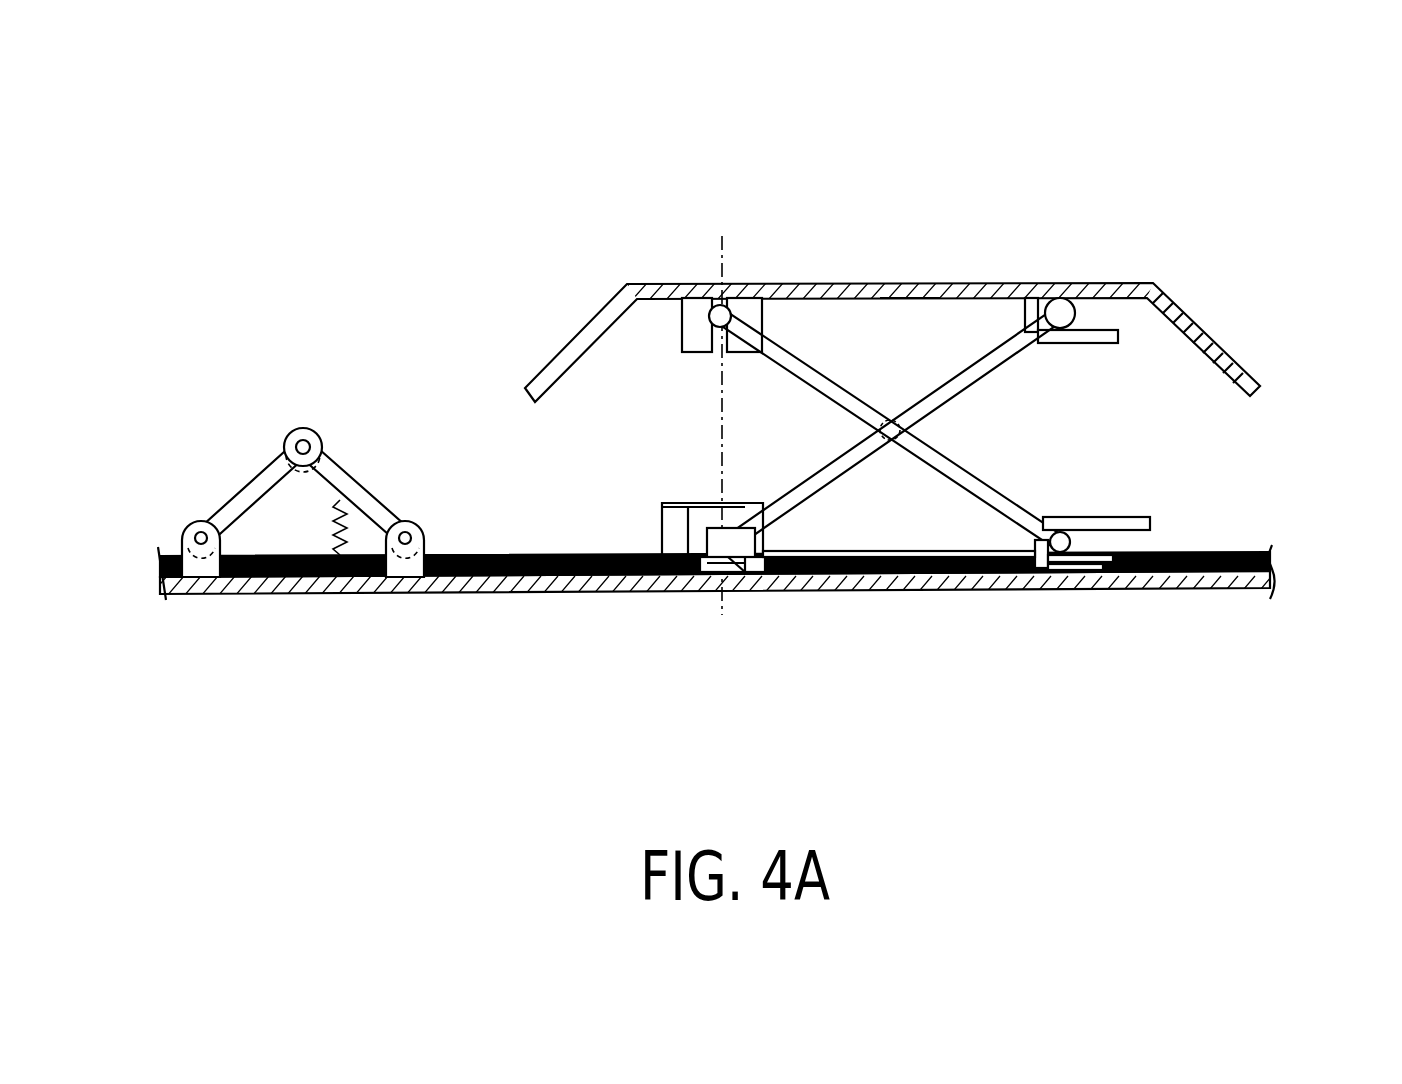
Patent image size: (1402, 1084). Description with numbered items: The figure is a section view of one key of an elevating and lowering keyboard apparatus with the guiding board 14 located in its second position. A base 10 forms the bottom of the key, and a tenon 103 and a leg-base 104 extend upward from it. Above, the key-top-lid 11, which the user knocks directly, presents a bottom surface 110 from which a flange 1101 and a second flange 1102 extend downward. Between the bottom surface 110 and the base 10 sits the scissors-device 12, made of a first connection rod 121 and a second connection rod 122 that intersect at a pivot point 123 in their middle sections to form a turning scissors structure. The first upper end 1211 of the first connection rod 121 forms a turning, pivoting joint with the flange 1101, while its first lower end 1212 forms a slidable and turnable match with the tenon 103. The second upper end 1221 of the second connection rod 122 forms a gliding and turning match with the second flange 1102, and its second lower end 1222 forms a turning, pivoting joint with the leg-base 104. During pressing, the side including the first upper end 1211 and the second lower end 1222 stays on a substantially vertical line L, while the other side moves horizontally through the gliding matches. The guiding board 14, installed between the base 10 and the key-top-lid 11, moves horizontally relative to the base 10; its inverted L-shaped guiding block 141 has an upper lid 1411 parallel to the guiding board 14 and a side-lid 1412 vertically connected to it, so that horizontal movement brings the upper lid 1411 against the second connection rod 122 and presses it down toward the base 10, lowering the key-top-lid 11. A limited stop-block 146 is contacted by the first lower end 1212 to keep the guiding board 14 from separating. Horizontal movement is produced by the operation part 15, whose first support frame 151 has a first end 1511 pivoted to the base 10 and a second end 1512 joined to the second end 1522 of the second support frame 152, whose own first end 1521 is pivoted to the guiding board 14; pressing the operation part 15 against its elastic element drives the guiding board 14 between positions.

The base 10 is at (930, 595).
The key-top-lid 11 is at (990, 284).
The bottom surface 110 is at (910, 298).
The flange 1101 is at (692, 333).
The second flange 1102 is at (1118, 345).
The scissors-device 12 is at (990, 432).
The first connection rod 121 is at (1010, 510).
The second connection rod 122 is at (800, 490).
The pivot point 123 is at (875, 433).
The first upper end 1211 is at (712, 304).
The first lower end 1212 is at (1058, 559).
The second upper end 1221 is at (1153, 283).
The second lower end 1222 is at (752, 565).
The guiding board 14 is at (912, 584).
The guiding block 141 is at (656, 616).
The upper lid 1411 is at (686, 575).
The side-lid 1412 is at (670, 523).
The limited stop-block 146 is at (1110, 548).
The tenon 103 is at (1087, 522).
The leg-base 104 is at (745, 575).
The operation part 15 is at (301, 457).
The first support frame 151 is at (240, 480).
The second support frame 152 is at (360, 480).
The first end of first support frame 1511 is at (183, 527).
The second end of first support frame 1512 is at (286, 440).
The first end of second support frame 1521 is at (425, 525).
The second end of second support frame 1522 is at (318, 432).
The vertical line L is at (718, 405).